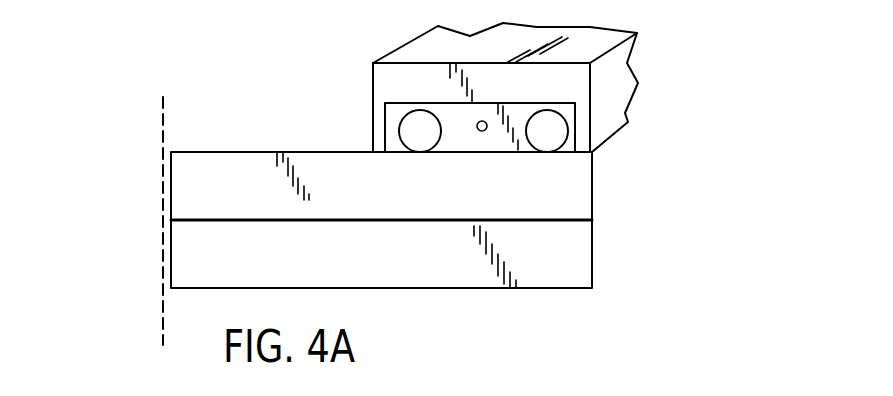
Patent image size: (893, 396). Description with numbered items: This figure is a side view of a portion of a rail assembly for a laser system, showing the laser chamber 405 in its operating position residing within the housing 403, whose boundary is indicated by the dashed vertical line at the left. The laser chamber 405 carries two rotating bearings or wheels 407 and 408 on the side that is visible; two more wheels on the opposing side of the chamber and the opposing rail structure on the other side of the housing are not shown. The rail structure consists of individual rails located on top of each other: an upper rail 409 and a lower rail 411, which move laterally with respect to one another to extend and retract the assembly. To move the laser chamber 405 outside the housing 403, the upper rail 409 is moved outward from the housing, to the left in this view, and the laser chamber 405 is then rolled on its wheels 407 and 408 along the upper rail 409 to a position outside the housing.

The housing 403 is at (163, 190).
The laser chamber 405 is at (593, 28).
The rotating bearing or wheel 407 is at (552, 134).
The rotating bearing or wheel 408 is at (414, 128).
The upper rail 409 is at (436, 205).
The lower rail 411 is at (431, 273).